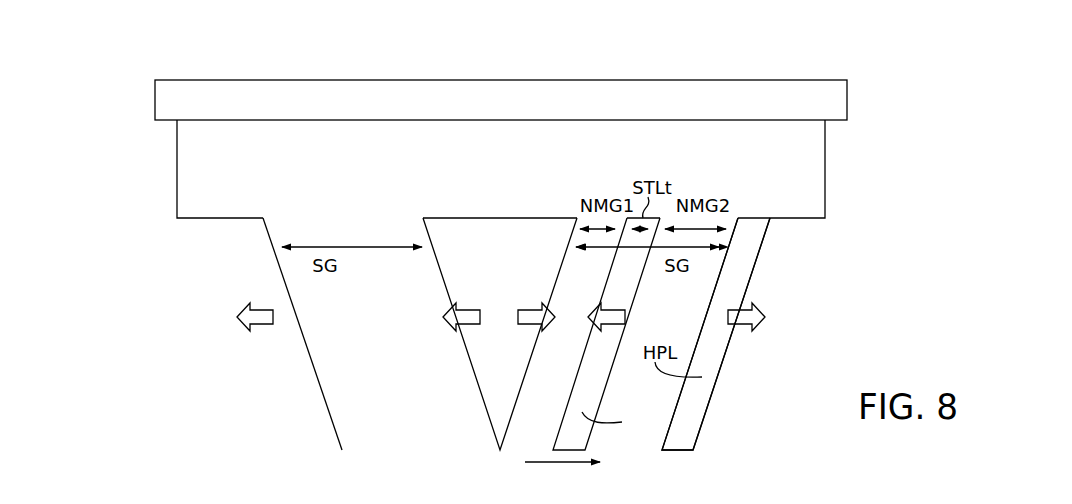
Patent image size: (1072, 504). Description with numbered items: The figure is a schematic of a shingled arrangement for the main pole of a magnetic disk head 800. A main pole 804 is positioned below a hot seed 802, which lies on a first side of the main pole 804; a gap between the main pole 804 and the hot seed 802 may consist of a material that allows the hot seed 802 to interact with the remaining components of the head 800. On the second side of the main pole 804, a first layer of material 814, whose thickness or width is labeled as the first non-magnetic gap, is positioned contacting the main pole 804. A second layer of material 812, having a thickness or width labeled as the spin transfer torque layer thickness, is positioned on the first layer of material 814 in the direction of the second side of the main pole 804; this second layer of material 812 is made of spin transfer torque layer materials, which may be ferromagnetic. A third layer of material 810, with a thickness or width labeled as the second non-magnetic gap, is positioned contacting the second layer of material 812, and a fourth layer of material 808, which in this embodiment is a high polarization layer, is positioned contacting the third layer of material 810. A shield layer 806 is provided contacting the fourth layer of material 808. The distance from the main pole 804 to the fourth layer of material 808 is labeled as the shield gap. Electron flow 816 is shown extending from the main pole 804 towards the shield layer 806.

The magnetic disk head 800 is at (962, 120).
The hot seed 802 is at (837, 96).
The main pole 804 is at (503, 235).
The shield layer 806 is at (212, 380).
The fourth layer of material 808 is at (738, 271).
The third layer of material 810 is at (640, 438).
The second layer of material 812 is at (627, 288).
The first layer of material 814 is at (527, 438).
The electron flow 816 is at (548, 466).